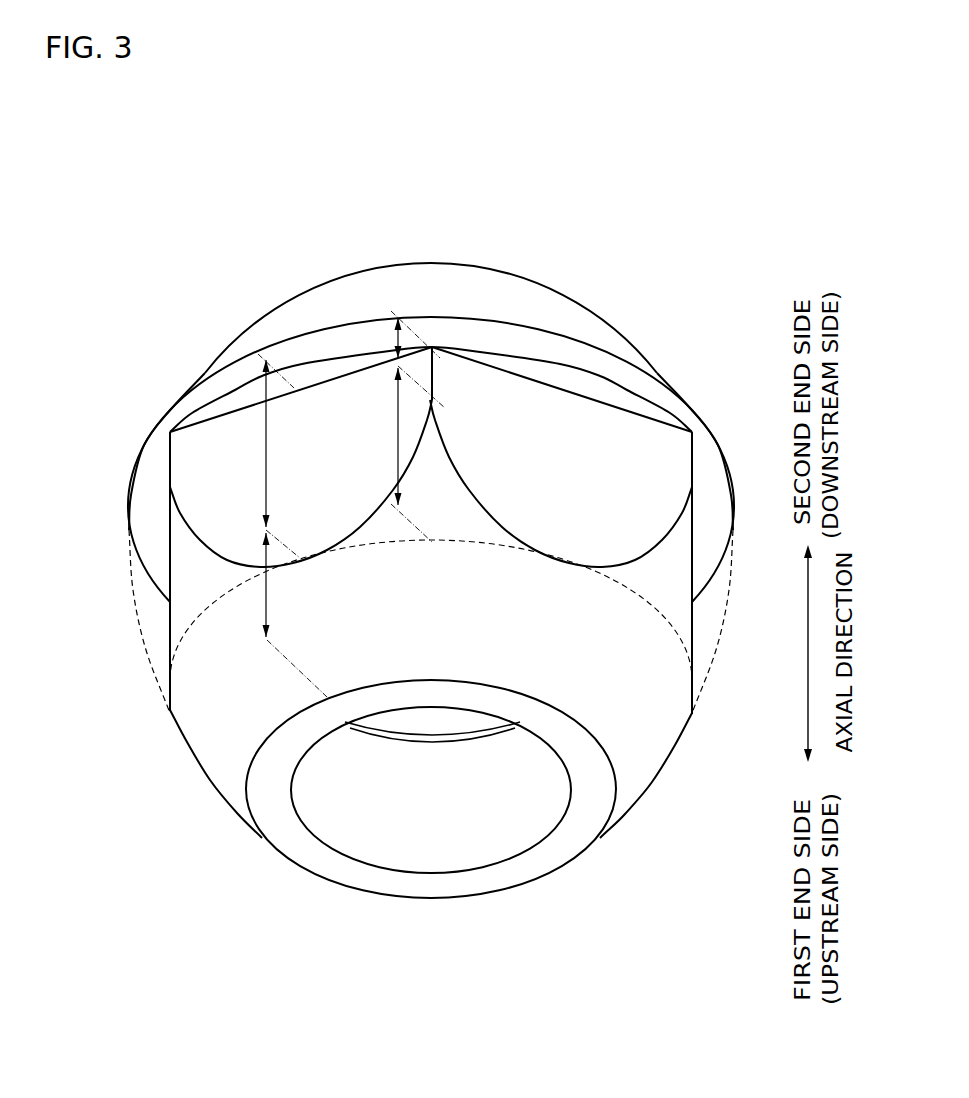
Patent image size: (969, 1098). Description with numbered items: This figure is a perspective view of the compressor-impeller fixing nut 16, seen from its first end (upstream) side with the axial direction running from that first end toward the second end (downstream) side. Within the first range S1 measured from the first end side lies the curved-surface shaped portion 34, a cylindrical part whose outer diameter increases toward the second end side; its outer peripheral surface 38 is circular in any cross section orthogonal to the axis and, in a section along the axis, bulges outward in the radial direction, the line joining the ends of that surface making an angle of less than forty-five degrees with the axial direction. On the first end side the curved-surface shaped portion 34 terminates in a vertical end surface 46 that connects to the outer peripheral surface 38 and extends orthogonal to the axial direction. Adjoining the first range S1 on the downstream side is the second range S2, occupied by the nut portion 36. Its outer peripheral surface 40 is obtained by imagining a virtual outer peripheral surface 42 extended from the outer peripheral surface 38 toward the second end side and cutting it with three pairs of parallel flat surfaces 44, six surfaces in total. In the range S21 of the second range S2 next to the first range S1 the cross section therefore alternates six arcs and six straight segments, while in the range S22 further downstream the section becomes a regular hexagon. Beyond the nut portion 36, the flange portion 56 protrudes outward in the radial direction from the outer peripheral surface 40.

The compressor-impeller fixing nut 16 is at (712, 186).
The curved-surface shaped portion 34 is at (215, 722).
The nut portion 36 is at (207, 496).
The outer peripheral surface 38 is at (647, 740).
The outer peripheral surface 40 is at (603, 440).
The virtual outer peripheral surface 42 is at (130, 628).
The parallel flat surfaces 44 is at (222, 472).
The vertical end surface 46 is at (583, 823).
The flange portion 56 is at (580, 355).
The first range S1 is at (268, 600).
The second range S2 is at (268, 452).
The range S21 is at (400, 437).
The range S22 is at (433, 374).